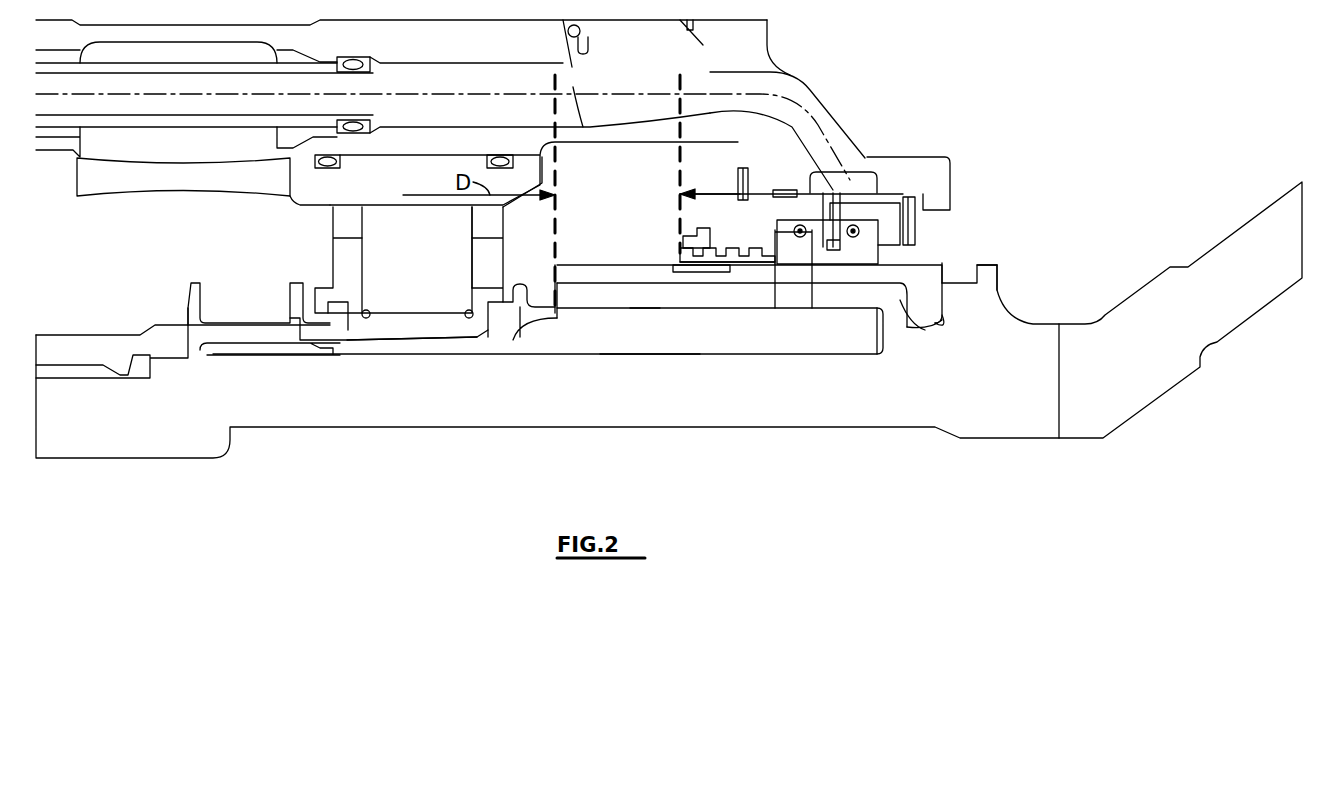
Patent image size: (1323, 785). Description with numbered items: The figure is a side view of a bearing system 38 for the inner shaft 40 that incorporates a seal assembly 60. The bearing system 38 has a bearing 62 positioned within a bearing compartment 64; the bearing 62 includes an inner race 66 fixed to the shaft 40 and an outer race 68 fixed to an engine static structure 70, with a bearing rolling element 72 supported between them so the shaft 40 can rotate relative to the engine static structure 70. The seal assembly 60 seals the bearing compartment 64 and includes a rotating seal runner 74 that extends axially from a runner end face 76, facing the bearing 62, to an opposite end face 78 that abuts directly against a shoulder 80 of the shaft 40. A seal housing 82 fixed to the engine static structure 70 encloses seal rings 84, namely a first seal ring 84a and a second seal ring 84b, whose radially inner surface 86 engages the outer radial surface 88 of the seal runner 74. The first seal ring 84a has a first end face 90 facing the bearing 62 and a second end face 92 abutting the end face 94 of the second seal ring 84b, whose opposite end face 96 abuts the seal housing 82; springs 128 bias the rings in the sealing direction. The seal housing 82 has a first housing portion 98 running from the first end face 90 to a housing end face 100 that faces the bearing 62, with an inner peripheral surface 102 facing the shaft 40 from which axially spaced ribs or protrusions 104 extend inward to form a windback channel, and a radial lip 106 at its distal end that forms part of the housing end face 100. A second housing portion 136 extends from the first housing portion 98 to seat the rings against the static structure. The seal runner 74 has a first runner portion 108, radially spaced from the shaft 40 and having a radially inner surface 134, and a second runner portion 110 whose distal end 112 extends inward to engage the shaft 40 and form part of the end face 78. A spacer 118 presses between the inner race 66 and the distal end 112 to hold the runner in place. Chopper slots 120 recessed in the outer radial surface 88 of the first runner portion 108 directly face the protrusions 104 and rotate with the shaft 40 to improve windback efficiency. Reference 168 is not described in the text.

The bearing system 38 is at (208, 238).
The inner shaft 40 is at (687, 410).
The seal assembly 60 is at (975, 222).
The bearing 62 is at (278, 205).
The bearing compartment 64 is at (693, 167).
The inner race 66 is at (378, 325).
The outer race 68 is at (393, 180).
The engine static structure 70 is at (843, 100).
The bearing rolling element 72 is at (385, 222).
The seal runner 74 is at (647, 300).
The runner end face 76 is at (557, 272).
The opposite end face 78 is at (952, 297).
The shoulder 80 is at (985, 258).
The seal housing 82 is at (893, 172).
The seal rings 84 is at (897, 227).
The first seal ring 84a is at (775, 212).
The second seal ring 84b is at (858, 253).
The radially inner surface 86 is at (777, 264).
The outer radial surface 88 is at (908, 270).
The first end face 90 is at (787, 232).
The second end face 92 is at (847, 187).
The end face 94 is at (847, 253).
The opposite end face 96 is at (910, 258).
The first housing portion 98 is at (690, 237).
The housing end face 100 is at (676, 243).
The inner peripheral surface 102 is at (695, 262).
The ribs or protrusions 104 is at (737, 257).
The radial lip 106 is at (683, 229).
The first runner portion 108 is at (625, 280).
The second runner portion 110 is at (865, 278).
The distal end 112 is at (925, 330).
The spacer 118 is at (518, 323).
The chopper slots 120 is at (692, 262).
The springs 128 is at (785, 220).
The radially inner surface 134 is at (600, 283).
The second housing portion 136 is at (888, 210).
The housing ledge 168 is at (615, 277).